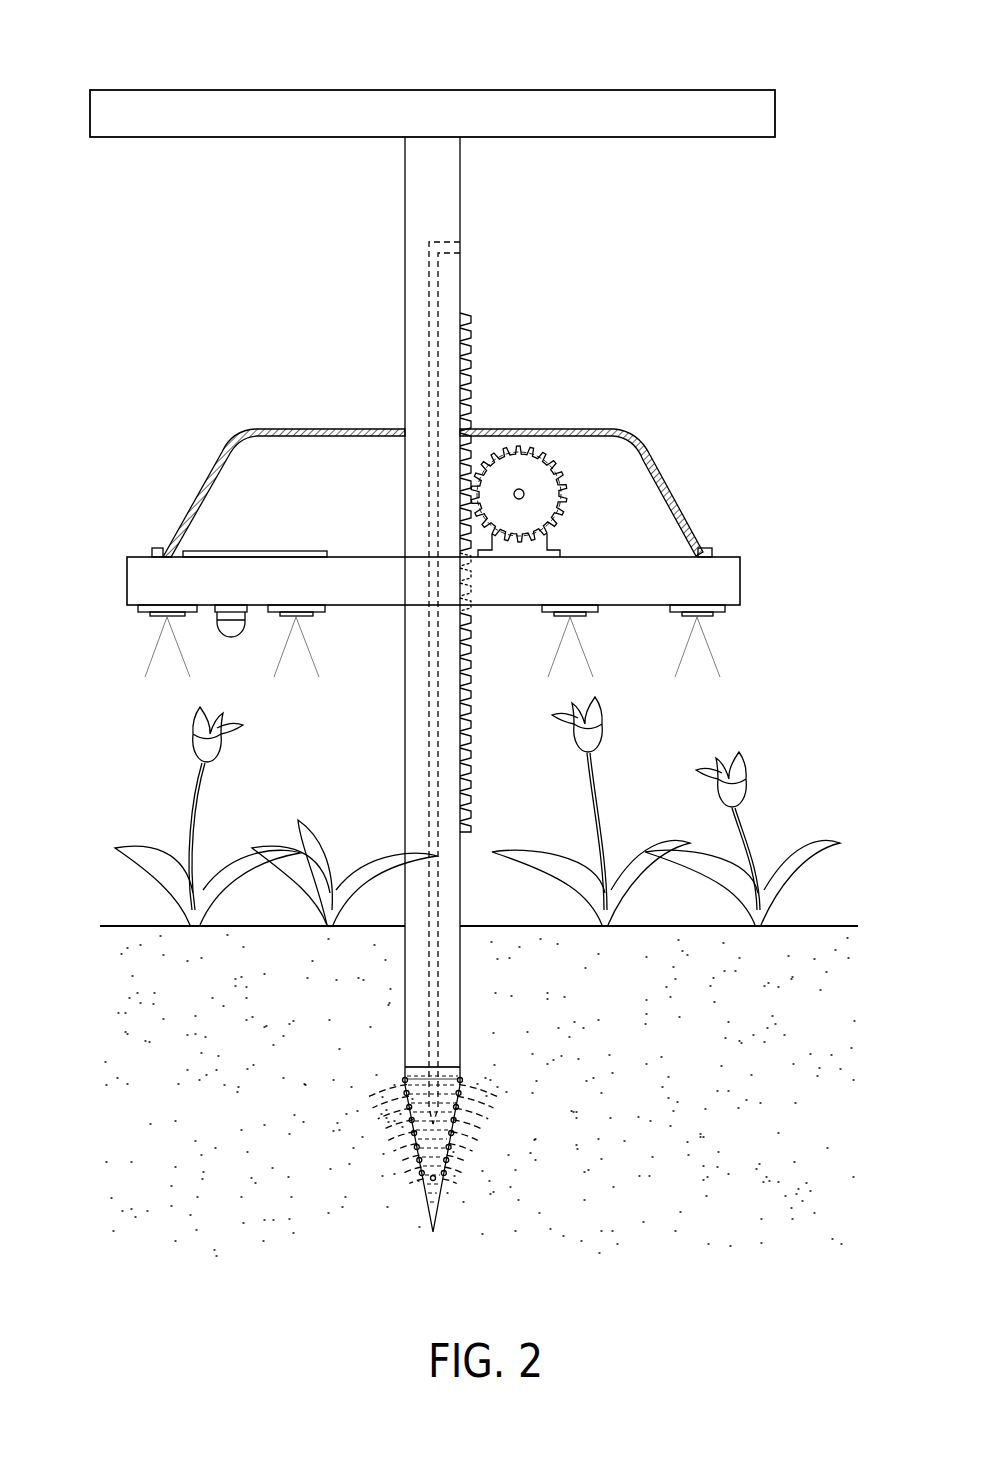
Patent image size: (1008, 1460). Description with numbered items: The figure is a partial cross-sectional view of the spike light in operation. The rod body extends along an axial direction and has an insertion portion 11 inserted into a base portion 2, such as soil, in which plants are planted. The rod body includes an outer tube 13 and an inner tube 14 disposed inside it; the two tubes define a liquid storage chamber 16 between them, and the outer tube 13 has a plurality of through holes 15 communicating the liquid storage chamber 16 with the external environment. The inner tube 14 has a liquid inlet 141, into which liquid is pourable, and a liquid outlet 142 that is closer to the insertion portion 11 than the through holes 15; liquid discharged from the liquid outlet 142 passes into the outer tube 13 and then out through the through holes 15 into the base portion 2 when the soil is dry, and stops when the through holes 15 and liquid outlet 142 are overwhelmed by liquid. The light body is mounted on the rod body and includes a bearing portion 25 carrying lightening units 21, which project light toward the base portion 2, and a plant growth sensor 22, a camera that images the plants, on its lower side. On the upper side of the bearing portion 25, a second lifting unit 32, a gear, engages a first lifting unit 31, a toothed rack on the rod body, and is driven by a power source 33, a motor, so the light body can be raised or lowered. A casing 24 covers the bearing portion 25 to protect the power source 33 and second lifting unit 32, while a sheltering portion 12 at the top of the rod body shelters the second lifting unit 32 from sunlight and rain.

The base portion 2 is at (818, 940).
The insertion portion 11 is at (383, 1140).
The sheltering portion 12 is at (658, 108).
The outer tube 13 is at (455, 188).
The inner tube 14 is at (435, 293).
The liquid inlet 141 is at (460, 248).
The liquid outlet 142 is at (418, 1175).
The through holes 15 is at (448, 1120).
The liquid storage chamber 16 is at (460, 1088).
The lightening unit 21 is at (137, 623).
The plant growth sensor 22 is at (230, 634).
The casing 24 is at (330, 430).
The bearing portion 25 is at (708, 582).
The first lifting unit 31 is at (470, 373).
The second lifting unit 32 is at (568, 470).
The power source 33 is at (550, 497).